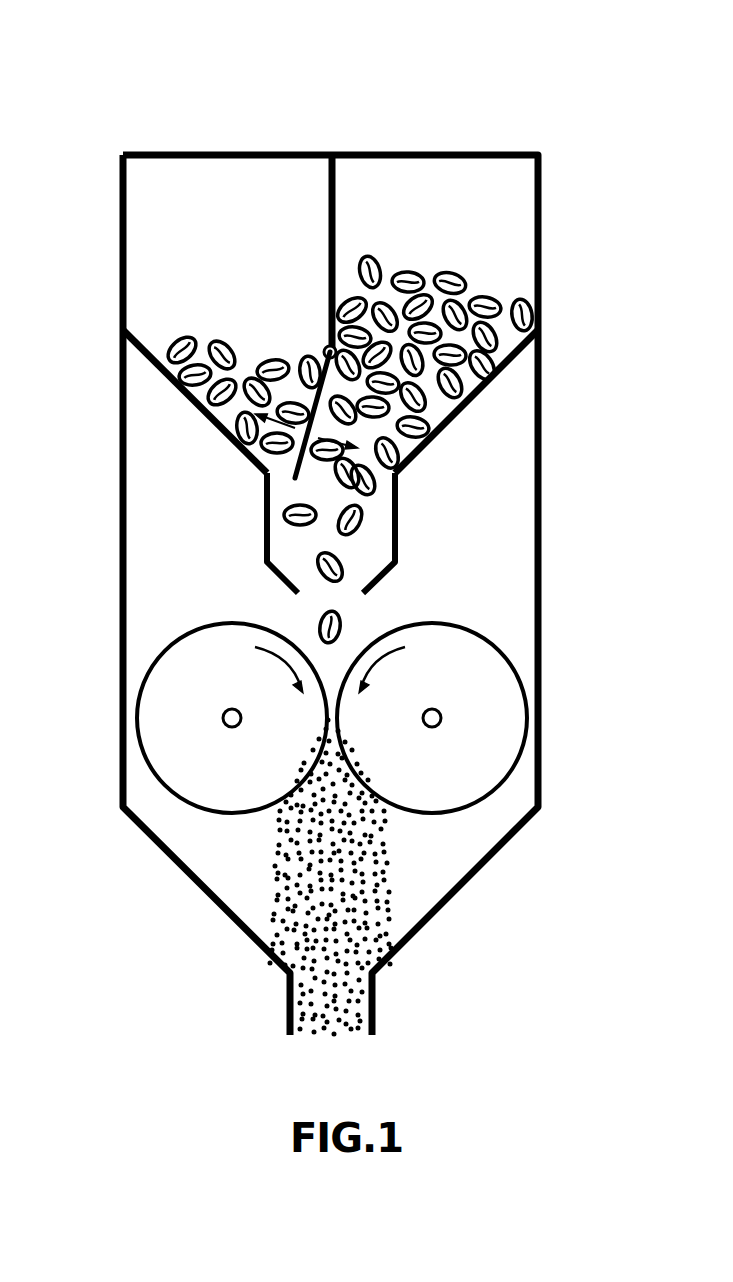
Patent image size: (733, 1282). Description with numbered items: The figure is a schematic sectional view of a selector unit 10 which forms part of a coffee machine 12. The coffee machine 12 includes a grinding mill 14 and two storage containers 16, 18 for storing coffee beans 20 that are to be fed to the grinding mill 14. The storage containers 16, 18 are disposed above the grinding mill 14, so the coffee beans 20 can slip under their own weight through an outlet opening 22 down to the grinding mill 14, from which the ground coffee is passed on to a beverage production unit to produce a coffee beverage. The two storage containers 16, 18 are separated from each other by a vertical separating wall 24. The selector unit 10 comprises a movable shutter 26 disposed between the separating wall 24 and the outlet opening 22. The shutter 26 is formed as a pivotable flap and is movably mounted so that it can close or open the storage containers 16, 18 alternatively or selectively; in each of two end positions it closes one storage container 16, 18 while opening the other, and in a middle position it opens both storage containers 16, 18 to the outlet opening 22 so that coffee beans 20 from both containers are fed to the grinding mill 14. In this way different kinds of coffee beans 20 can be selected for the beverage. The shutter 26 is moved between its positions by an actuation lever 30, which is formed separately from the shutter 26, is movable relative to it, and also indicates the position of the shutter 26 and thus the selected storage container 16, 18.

The selector unit 10 is at (558, 172).
The coffee machine 12 is at (78, 82).
The grinding mill 14 is at (97, 738).
The storage container 16 is at (448, 190).
The storage container 18 is at (212, 190).
The coffee beans 20 is at (540, 315).
The outlet opening 22 is at (340, 600).
The vertical separating wall 24 is at (337, 180).
The movable shutter 26 is at (293, 470).
The actuation lever 30 is at (398, 452).